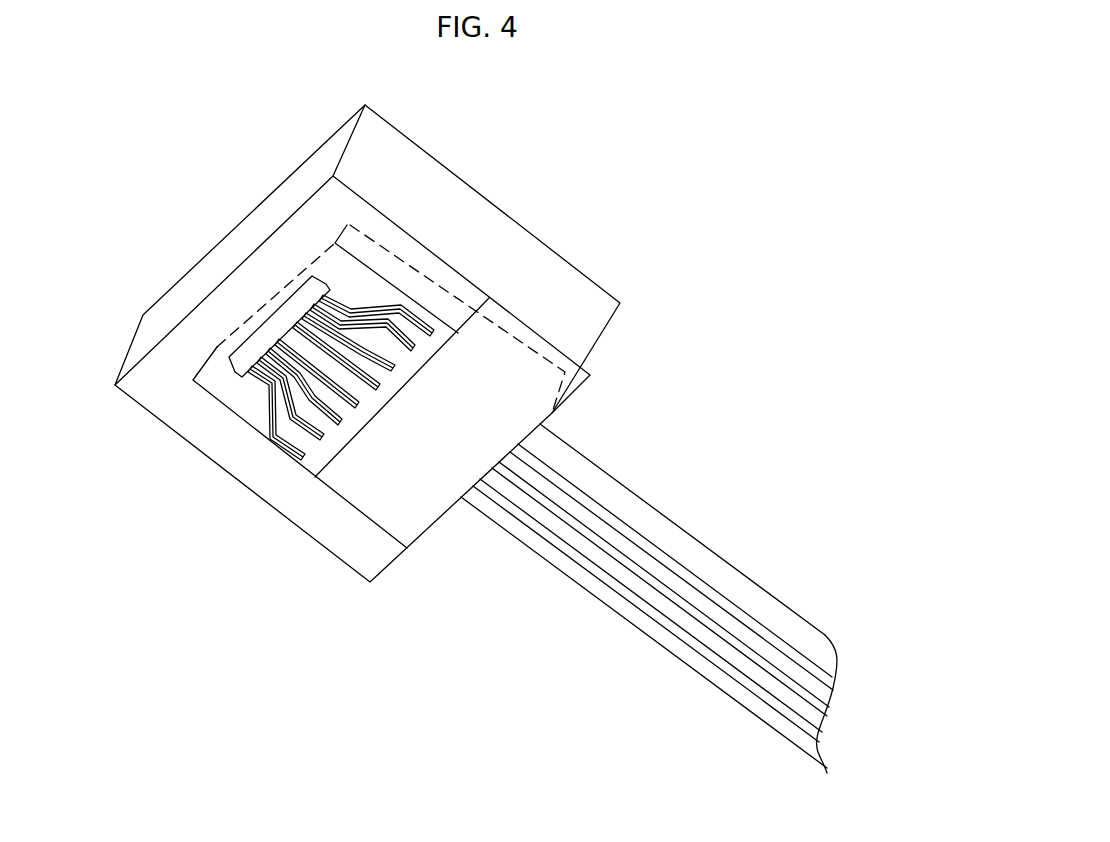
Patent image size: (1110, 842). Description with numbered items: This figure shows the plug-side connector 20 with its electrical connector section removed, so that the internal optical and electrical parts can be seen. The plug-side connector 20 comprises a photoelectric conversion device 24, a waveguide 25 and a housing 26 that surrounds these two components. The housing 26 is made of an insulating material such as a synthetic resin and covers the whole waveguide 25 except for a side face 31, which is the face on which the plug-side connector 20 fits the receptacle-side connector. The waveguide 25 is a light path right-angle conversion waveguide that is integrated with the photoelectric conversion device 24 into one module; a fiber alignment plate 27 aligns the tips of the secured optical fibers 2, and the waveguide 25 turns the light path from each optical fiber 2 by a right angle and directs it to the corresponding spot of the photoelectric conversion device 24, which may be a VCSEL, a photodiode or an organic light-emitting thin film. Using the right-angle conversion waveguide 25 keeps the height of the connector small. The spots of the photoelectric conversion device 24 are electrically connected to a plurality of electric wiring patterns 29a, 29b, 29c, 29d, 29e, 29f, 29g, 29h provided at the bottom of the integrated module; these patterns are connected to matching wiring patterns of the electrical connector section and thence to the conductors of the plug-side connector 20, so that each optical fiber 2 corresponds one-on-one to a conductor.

The plug-side connector 20 is at (387, 155).
The optical fibers 2 is at (590, 594).
The photoelectric conversion device 24 is at (232, 372).
The waveguide 25 is at (208, 375).
The housing 26 is at (582, 327).
The fiber alignment plate 27 is at (540, 413).
The side face 31 is at (293, 508).
The electric wiring pattern 29a is at (275, 448).
The electric wiring pattern 29b is at (322, 440).
The electric wiring pattern 29c is at (340, 425).
The electric wiring pattern 29d is at (357, 407).
The electric wiring pattern 29e is at (380, 390).
The electric wiring pattern 29f is at (398, 372).
The electric wiring pattern 29g is at (413, 348).
The electric wiring pattern 29h is at (432, 333).